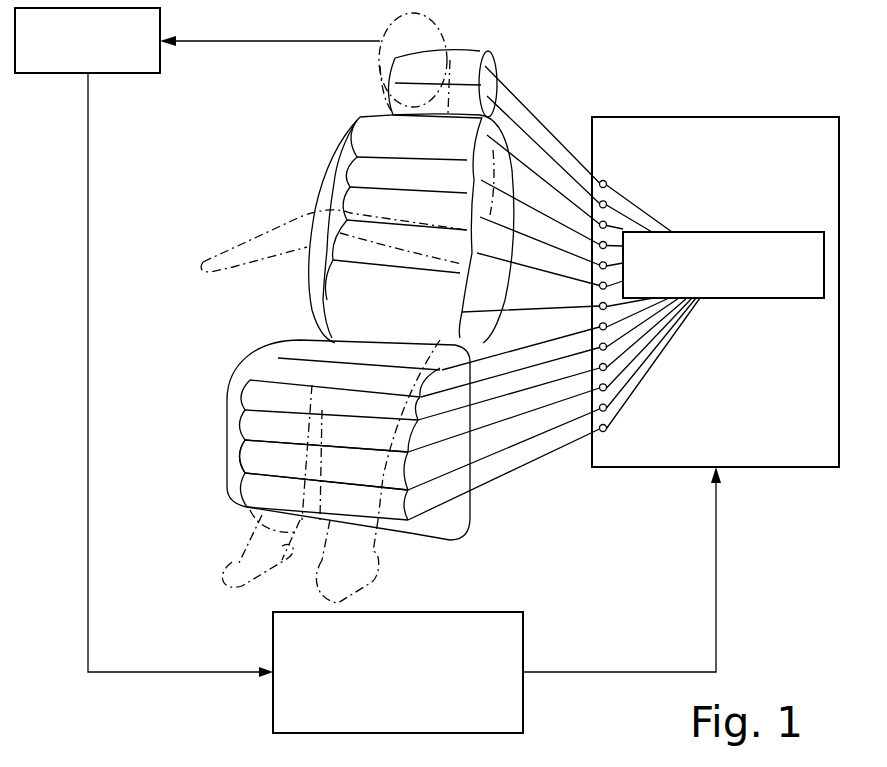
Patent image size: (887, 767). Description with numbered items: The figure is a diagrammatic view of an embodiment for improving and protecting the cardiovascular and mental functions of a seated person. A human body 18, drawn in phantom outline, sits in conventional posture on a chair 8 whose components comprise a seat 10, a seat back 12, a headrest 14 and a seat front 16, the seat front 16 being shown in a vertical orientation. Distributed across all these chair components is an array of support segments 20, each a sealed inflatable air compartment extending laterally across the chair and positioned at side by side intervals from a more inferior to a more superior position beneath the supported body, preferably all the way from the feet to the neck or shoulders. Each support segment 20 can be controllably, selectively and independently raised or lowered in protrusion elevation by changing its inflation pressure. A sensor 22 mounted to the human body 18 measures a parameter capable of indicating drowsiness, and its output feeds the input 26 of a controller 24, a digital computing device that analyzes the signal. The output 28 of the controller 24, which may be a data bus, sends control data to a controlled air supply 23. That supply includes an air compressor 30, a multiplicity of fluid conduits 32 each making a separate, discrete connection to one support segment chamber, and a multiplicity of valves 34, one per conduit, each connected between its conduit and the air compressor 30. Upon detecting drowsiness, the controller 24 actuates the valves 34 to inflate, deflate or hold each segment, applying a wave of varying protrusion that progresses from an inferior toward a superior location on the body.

The chair 8 is at (349, 280).
The seat 10 is at (253, 352).
The seat back 12 is at (353, 128).
The headrest 14 is at (460, 47).
The seat front 16 is at (230, 455).
The human body 18 is at (262, 227).
The support segments 20 is at (390, 100).
The sensor 22 is at (64, 78).
The controlled air supply 23 is at (776, 117).
The controller 24 is at (462, 611).
The input 26 is at (188, 671).
The output 28 is at (571, 671).
The air compressor 30 is at (811, 232).
The fluid conduits 32 is at (545, 470).
The valves 34 is at (603, 152).